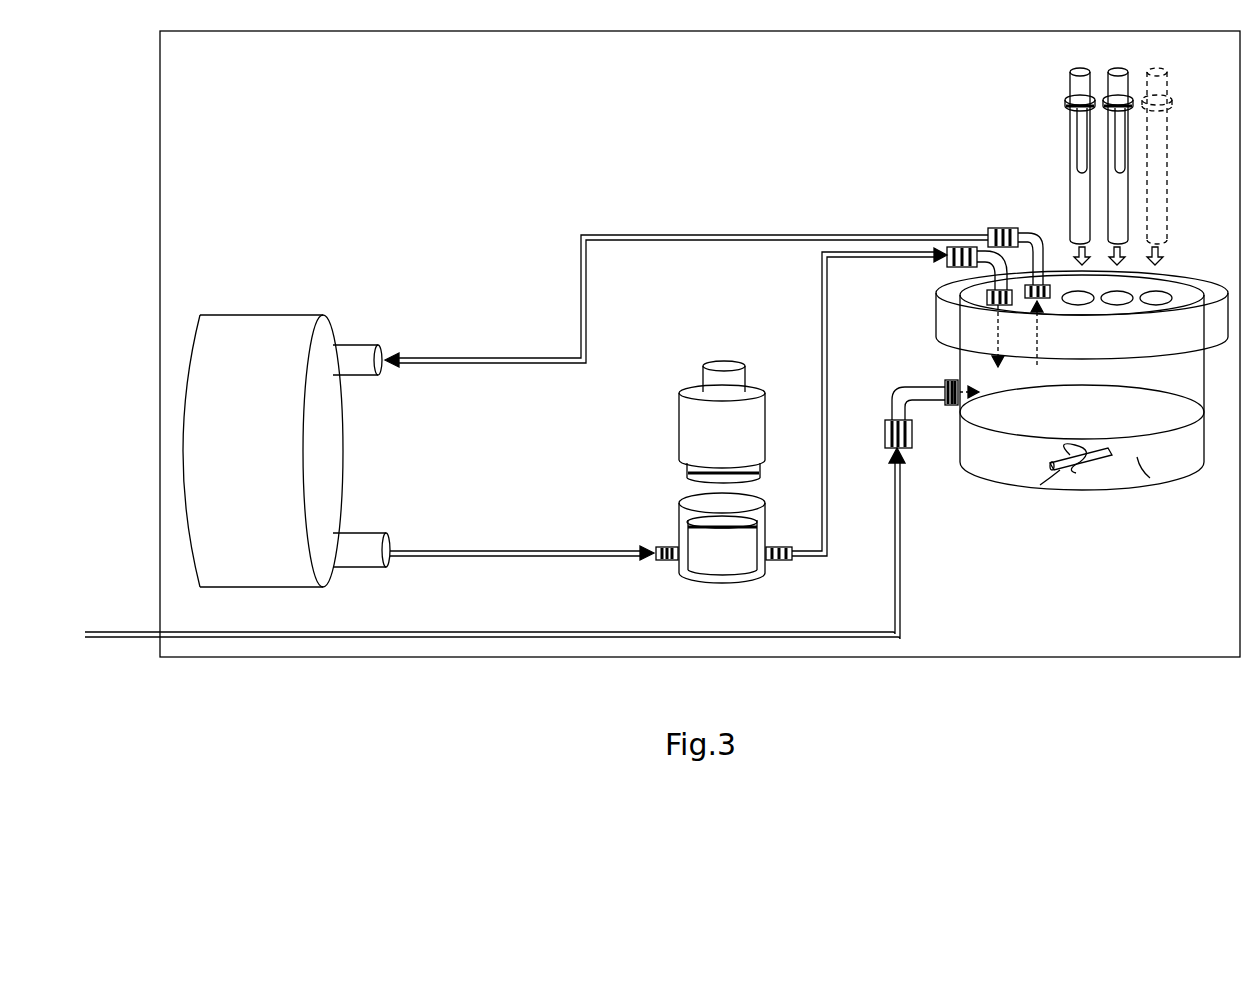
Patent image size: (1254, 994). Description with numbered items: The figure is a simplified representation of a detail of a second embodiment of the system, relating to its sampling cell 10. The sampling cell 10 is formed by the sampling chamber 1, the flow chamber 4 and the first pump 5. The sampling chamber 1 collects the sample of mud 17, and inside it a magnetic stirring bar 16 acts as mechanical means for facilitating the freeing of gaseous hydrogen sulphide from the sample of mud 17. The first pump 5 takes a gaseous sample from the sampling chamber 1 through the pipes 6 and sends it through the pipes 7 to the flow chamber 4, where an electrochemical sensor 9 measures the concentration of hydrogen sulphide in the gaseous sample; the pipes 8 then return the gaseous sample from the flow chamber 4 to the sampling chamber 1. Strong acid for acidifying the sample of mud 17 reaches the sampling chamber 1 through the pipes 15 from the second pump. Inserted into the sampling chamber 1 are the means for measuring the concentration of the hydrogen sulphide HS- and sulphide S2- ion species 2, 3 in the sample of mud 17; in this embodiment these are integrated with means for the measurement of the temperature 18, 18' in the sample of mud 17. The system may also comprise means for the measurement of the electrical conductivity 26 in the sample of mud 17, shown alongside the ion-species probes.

The sampling chamber 1 is at (1172, 375).
The means for the measurement of the concentration of the HS- ion species 2 is at (1068, 90).
The means for the measurement of the concentration of the S2- ion species 3 is at (1123, 95).
The flow chamber 4 is at (720, 550).
The first pump 5 is at (238, 347).
The pipes 6 is at (650, 233).
The pipes 7 is at (822, 357).
The pipes 8 is at (492, 550).
The electrochemical sensor 9 is at (695, 443).
The sampling cell 10 is at (468, 658).
The pipes 15 is at (898, 537).
The magnetic stirring bar 16 is at (1045, 490).
The sample of mud 17 is at (1137, 457).
The means for the measurement of the temperature 18 is at (1051, 140).
The means for the measurement of the temperature 18' is at (1071, 165).
The means for the measurement of the electrical conductivity 26 is at (1163, 88).